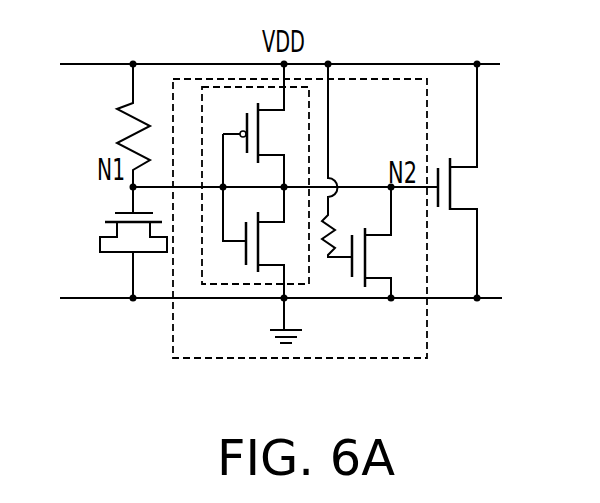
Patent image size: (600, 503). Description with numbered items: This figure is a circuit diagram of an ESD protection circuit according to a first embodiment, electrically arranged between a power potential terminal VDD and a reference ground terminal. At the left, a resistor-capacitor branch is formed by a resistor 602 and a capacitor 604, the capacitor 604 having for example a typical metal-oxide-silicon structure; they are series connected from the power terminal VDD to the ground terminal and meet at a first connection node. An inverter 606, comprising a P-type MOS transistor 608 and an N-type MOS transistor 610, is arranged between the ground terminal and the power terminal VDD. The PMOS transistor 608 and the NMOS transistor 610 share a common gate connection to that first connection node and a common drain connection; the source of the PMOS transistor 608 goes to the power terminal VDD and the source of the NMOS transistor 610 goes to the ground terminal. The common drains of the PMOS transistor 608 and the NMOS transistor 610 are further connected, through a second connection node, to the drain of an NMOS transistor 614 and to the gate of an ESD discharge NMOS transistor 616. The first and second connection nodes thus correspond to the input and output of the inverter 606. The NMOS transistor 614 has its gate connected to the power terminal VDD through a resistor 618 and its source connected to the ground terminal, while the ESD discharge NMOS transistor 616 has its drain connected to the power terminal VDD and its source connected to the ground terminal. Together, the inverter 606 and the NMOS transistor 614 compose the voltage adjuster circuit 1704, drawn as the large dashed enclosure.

The resistor 602 is at (118, 107).
The capacitor 604 is at (122, 212).
The inverter 606 is at (202, 87).
The PMOS transistor 608 is at (245, 123).
The NMOS transistor 610 is at (244, 254).
The NMOS transistor 614 is at (367, 260).
The ESD discharge NMOS transistor 616 is at (453, 192).
The resistor 618 is at (337, 214).
The voltage adjuster circuit 1704 is at (428, 334).